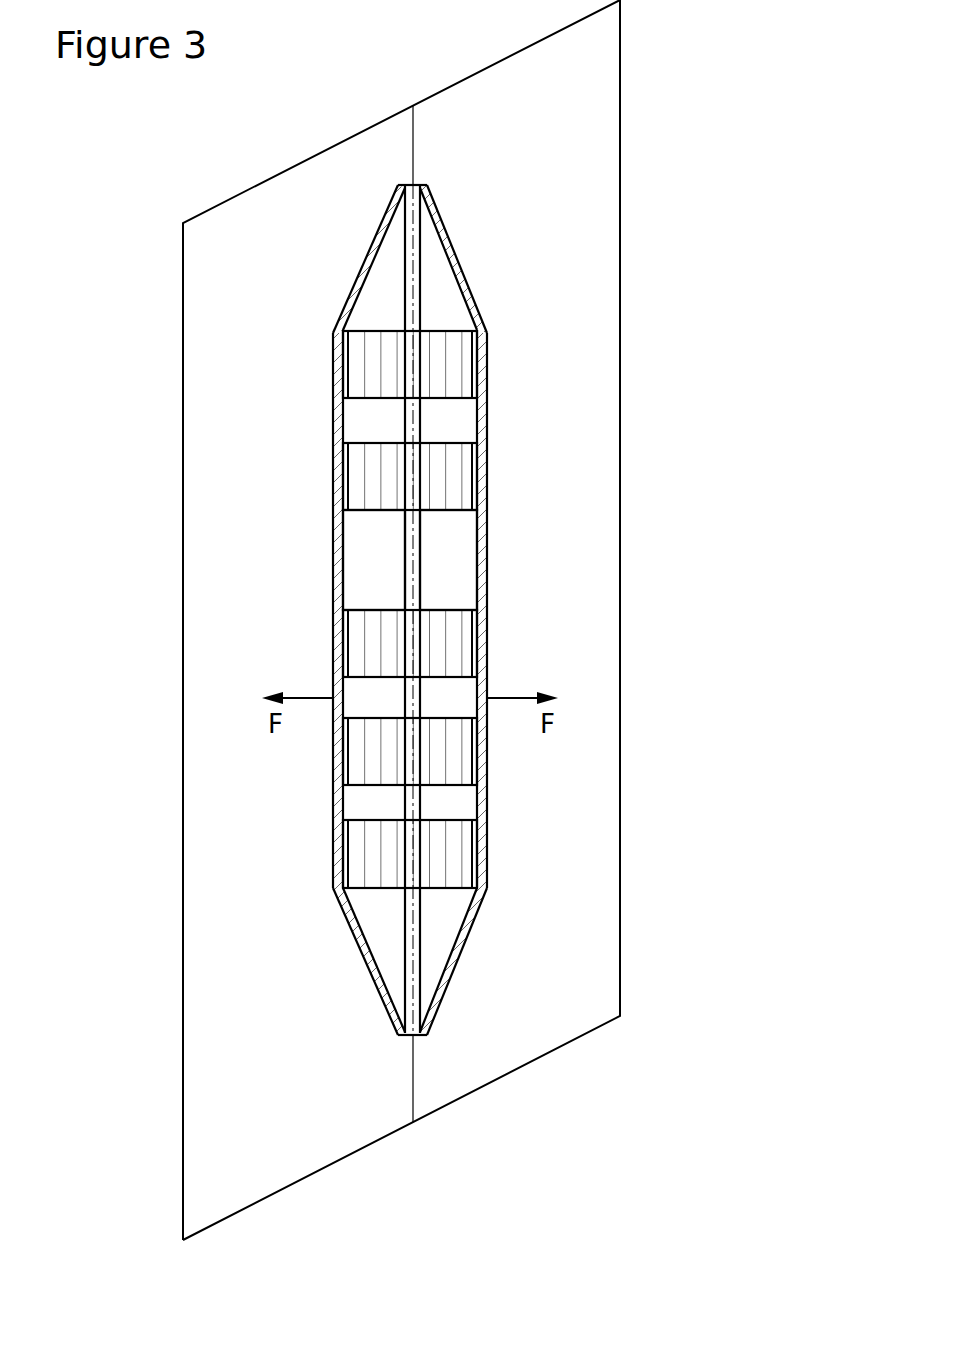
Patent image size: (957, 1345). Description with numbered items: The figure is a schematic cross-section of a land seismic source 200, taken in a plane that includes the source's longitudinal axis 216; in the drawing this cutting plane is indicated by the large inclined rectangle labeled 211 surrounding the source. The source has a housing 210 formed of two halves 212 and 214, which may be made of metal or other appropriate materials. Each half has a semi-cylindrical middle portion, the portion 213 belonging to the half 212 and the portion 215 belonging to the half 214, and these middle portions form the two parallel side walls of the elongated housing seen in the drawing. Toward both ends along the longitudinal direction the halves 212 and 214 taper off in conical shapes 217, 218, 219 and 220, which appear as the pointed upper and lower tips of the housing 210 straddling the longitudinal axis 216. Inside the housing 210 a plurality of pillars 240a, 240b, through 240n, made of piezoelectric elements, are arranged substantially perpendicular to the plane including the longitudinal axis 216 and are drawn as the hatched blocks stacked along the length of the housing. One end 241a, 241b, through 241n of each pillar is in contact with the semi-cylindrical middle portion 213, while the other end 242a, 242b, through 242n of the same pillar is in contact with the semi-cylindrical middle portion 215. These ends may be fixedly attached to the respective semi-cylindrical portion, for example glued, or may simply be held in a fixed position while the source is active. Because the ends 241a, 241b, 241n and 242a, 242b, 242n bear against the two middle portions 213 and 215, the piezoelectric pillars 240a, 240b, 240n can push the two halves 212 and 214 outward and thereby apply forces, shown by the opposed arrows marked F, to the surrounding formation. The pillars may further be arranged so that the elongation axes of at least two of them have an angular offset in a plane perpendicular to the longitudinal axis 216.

The land seismic source 200 is at (348, 110).
The housing 210 is at (337, 803).
The reference plane 211 is at (183, 683).
The half of the housing 212 is at (380, 555).
The semi-cylindrical middle portion 213 is at (340, 597).
The half of the housing 214 is at (445, 550).
The semi-cylindrical middle portion 215 is at (483, 600).
The longitudinal axis 216 is at (415, 995).
The conical shape 217 is at (381, 274).
The conical shape 218 is at (437, 270).
The conical shape 219 is at (365, 950).
The conical shape 220 is at (465, 938).
The pillar 240a is at (468, 372).
The pillar 240b is at (466, 480).
The pillar 240n is at (462, 860).
The end of pillar 241a is at (345, 372).
The end of pillar 241b is at (345, 475).
The end of pillar 241n is at (345, 858).
The other end of pillar 242a is at (480, 346).
The other end of pillar 242b is at (480, 452).
The other end of pillar 242n is at (478, 835).